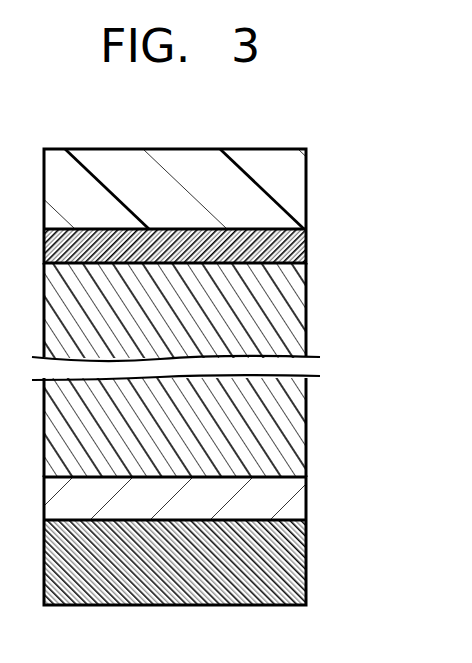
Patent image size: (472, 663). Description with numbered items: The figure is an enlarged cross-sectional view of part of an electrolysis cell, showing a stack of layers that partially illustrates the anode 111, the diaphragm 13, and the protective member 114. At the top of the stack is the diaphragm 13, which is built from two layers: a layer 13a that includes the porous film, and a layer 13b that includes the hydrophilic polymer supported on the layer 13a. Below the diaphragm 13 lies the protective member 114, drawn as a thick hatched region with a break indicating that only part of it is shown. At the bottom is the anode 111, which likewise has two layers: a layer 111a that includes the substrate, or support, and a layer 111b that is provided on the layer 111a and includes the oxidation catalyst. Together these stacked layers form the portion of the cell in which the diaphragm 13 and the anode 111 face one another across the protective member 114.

The diaphragm 13 is at (390, 173).
The layer including porous film 13a is at (277, 197).
The layer including hydrophilic polymer 13b is at (278, 245).
The protective member 114 is at (278, 400).
The anode 111 is at (397, 488).
The layer including oxidation catalyst 111b is at (277, 502).
The layer including substrate 111a is at (277, 562).